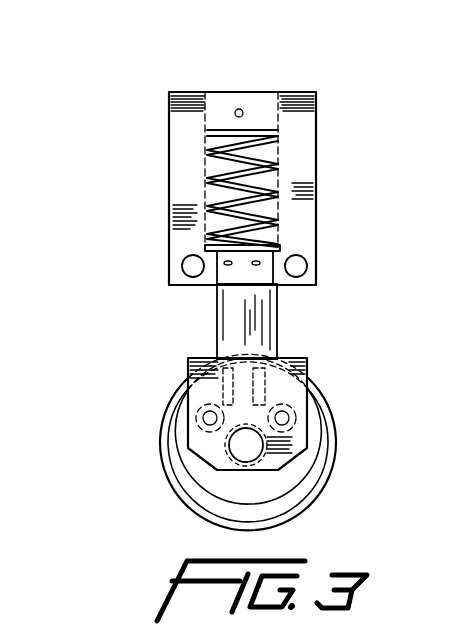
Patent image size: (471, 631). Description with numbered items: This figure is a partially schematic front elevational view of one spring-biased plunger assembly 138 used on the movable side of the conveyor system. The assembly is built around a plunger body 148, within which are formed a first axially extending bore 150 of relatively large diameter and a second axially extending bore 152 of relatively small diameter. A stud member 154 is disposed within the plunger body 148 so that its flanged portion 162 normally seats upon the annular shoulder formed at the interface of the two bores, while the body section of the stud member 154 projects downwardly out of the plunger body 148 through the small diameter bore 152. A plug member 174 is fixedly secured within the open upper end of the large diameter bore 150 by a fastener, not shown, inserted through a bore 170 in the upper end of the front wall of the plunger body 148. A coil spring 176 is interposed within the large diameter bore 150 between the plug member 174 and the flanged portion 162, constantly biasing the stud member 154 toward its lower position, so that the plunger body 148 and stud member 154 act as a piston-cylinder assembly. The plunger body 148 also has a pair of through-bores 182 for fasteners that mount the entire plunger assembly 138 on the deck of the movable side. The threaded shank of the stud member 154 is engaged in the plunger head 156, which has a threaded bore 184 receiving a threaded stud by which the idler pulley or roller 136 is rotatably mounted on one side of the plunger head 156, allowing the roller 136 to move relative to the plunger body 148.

The idler pulley or roller 136 is at (337, 446).
The plunger assembly 138 is at (343, 218).
The plunger body 148 is at (298, 147).
The first axially extending bore 150 is at (208, 184).
The second axially extending bore 152 is at (277, 290).
The stud member 154 is at (214, 307).
The plunger head 156 is at (308, 374).
The flanged portion 162 is at (317, 243).
The bore 170 is at (243, 109).
The plug member 174 is at (224, 100).
The coil spring 176 is at (205, 157).
The through-bores 182 is at (193, 267).
The threaded bore 184 is at (264, 452).